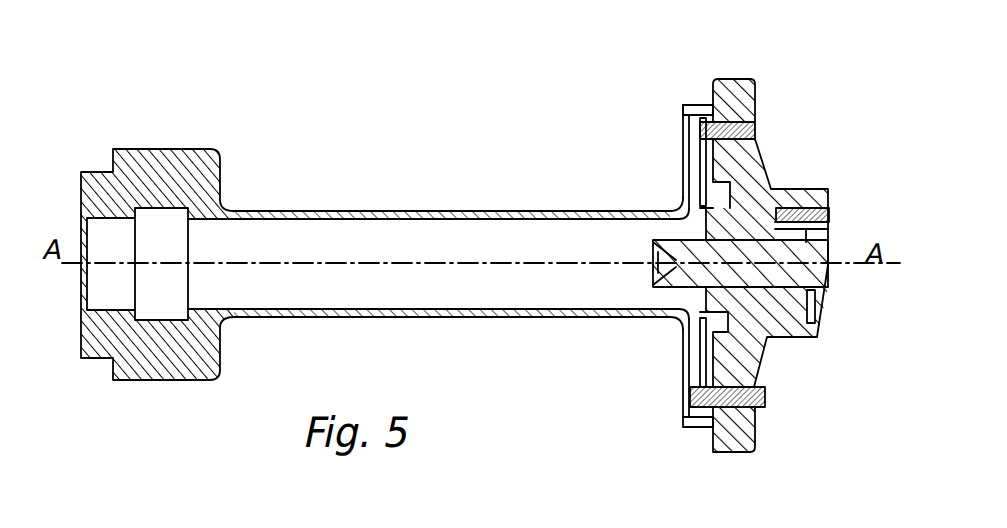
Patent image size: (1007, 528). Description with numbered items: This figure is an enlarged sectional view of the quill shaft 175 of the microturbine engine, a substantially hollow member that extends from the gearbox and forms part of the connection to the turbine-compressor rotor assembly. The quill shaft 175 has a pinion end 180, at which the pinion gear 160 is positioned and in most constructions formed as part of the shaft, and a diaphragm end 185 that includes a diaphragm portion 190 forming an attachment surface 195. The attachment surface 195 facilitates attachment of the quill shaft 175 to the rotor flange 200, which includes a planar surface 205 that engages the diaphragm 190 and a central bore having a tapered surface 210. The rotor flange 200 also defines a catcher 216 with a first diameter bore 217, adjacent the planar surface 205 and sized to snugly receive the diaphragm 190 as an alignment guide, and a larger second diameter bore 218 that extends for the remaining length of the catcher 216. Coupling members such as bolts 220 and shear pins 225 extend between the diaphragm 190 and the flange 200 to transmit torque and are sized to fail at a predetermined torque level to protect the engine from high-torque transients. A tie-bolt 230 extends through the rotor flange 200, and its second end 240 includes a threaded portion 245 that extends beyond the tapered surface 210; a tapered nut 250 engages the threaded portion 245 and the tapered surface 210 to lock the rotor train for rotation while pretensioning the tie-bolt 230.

The pinion gear 160 is at (162, 151).
The quill shaft 175 is at (459, 108).
The pinion end 180 is at (225, 205).
The diaphragm end 185 is at (683, 212).
The diaphragm portion 190 is at (703, 353).
The attachment surface 195 is at (715, 142).
The rotor flange 200 is at (760, 352).
The planar surface 205 is at (703, 167).
The tapered surface 210 is at (703, 312).
The catcher 216 is at (697, 103).
The first diameter bore 217 is at (727, 452).
The second diameter bore 218 is at (683, 400).
The bolts 220 is at (767, 405).
The shear pins 225 is at (688, 127).
The tie-bolt 230 is at (653, 285).
The second end 240 is at (823, 275).
The threaded portion 245 is at (695, 232).
The tapered nut 250 is at (725, 193).